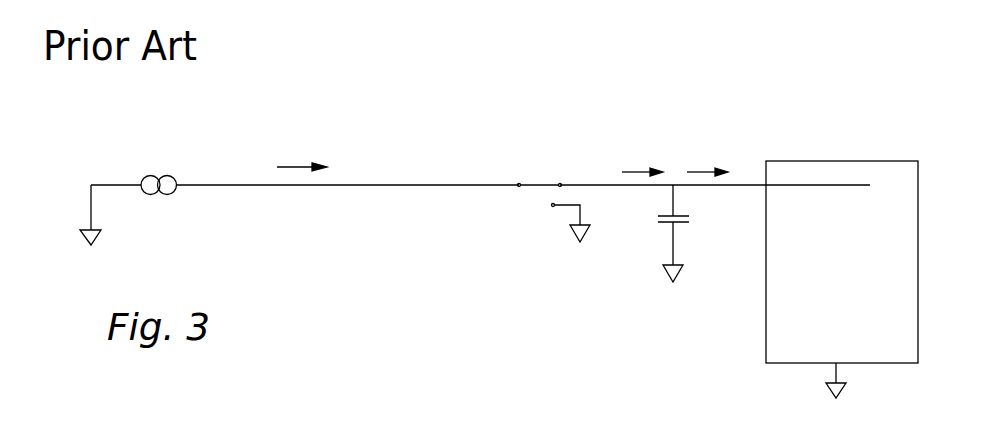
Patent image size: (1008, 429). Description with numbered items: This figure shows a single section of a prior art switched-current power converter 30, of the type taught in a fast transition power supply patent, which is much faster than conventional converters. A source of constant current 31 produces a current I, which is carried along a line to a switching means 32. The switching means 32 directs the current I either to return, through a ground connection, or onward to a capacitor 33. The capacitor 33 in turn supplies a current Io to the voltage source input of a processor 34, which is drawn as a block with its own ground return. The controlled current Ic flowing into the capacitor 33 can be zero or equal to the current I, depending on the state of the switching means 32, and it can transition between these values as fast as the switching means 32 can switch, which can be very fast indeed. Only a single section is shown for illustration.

The switched-current power converter 30 is at (450, 52).
The source of constant current 31 is at (173, 167).
The switching means 32 is at (536, 207).
The capacitor 33 is at (650, 232).
The processor 34 is at (760, 276).